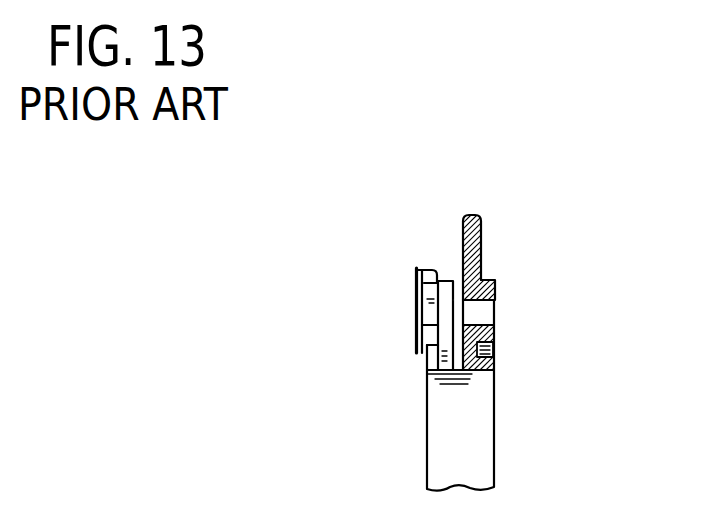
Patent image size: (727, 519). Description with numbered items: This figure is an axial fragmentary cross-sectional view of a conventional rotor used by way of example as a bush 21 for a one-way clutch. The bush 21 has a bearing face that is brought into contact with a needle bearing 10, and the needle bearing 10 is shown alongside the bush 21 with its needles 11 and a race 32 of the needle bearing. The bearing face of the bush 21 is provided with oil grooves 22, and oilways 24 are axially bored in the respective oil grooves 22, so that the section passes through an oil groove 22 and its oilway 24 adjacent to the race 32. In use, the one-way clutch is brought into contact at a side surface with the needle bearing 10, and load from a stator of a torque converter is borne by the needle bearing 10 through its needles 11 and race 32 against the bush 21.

The needle bearing 10 is at (417, 267).
The needles 11 is at (427, 305).
The race of the needle bearing 32 is at (439, 280).
The oil grooves 22 is at (457, 272).
The bush 21 is at (482, 214).
The oilways 24 is at (496, 313).